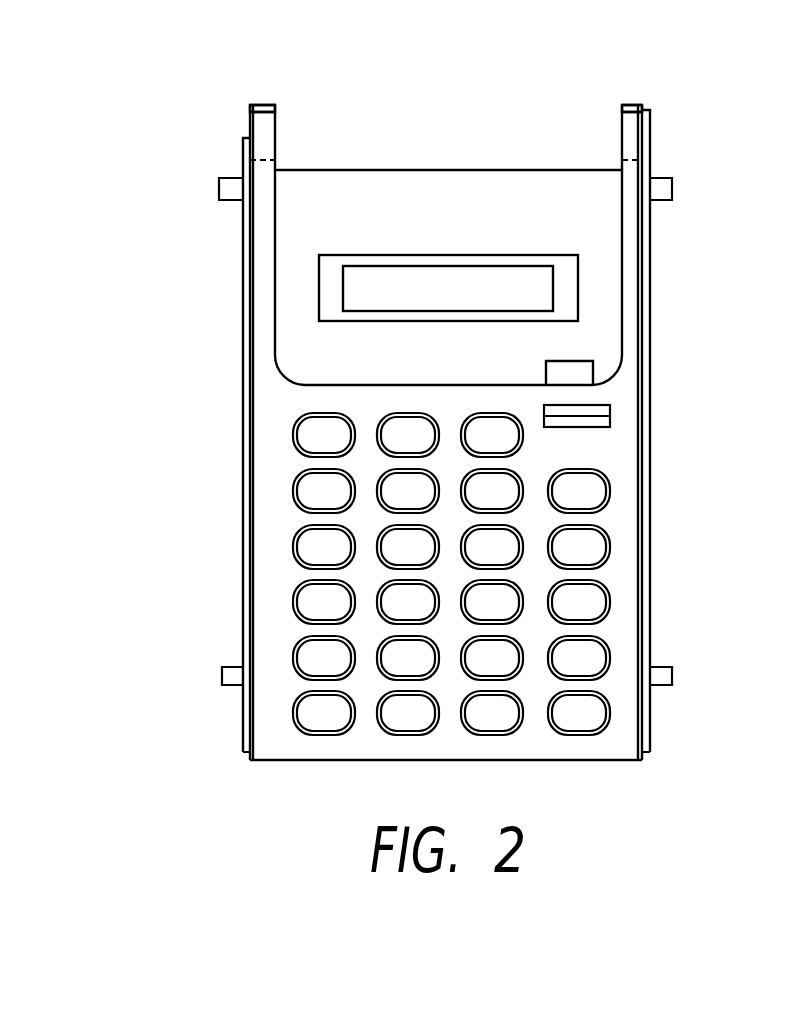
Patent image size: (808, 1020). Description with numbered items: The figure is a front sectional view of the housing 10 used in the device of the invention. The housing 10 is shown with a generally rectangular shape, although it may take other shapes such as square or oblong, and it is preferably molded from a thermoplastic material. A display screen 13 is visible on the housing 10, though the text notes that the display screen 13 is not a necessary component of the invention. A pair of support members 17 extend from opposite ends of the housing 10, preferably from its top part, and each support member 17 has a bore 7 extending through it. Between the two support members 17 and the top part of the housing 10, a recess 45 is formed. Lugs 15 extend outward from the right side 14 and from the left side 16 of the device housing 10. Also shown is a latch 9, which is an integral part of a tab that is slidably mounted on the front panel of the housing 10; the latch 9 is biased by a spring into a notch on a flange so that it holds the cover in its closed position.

The bore 7 is at (250, 128).
The latch 9 is at (569, 372).
The housing 10 is at (274, 385).
The display screen 13 is at (526, 287).
The right side 14 is at (651, 515).
The lug 15 is at (673, 186).
The left side 16 is at (243, 445).
The support member 17 is at (263, 104).
The recess 45 is at (423, 153).